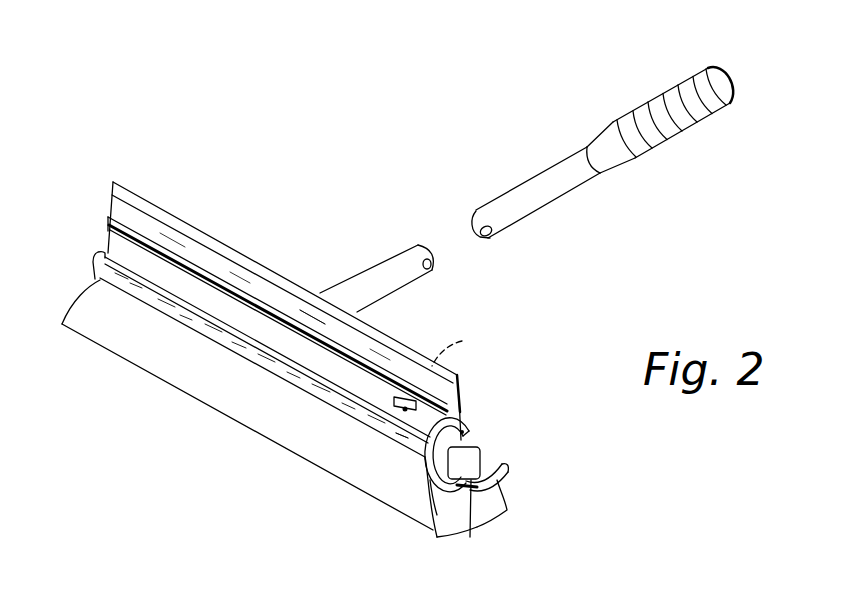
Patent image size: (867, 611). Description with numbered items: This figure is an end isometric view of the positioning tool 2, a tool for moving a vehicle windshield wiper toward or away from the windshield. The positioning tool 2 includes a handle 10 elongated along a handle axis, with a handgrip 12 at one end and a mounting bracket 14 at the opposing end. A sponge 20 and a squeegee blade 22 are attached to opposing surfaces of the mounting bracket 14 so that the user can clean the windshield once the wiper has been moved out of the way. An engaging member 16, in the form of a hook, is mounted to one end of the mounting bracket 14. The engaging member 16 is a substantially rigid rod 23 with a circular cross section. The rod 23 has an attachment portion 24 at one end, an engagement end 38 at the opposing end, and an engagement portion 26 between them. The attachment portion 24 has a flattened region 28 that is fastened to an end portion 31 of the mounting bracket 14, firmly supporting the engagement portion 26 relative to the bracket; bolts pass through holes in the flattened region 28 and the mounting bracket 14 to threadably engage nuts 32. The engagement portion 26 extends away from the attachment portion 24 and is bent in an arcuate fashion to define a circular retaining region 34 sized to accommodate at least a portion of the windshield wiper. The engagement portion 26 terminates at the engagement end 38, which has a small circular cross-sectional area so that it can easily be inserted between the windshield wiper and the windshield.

The positioning tool 2 is at (376, 128).
The handle 10 is at (490, 207).
The handgrip 12 is at (642, 108).
The mounting bracket 14 is at (105, 246).
The engaging member 16 is at (413, 481).
The sponge 20 is at (148, 370).
The squeegee blade 22 is at (416, 358).
The rigid rod 23 is at (467, 445).
The attachment portion 24 is at (470, 434).
The engagement portion 26 is at (427, 507).
The flattened region 28 is at (464, 346).
The end portion 31 is at (358, 413).
The nuts 32 is at (404, 411).
The retaining region 34 is at (503, 503).
The engagement end 38 is at (508, 470).